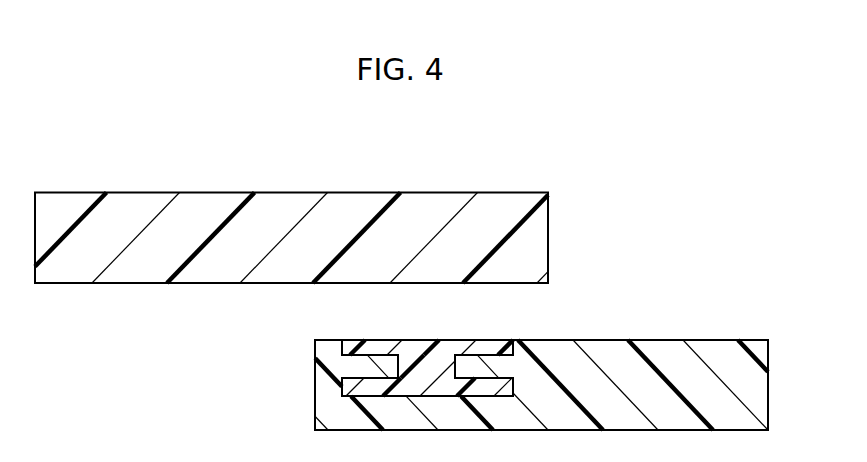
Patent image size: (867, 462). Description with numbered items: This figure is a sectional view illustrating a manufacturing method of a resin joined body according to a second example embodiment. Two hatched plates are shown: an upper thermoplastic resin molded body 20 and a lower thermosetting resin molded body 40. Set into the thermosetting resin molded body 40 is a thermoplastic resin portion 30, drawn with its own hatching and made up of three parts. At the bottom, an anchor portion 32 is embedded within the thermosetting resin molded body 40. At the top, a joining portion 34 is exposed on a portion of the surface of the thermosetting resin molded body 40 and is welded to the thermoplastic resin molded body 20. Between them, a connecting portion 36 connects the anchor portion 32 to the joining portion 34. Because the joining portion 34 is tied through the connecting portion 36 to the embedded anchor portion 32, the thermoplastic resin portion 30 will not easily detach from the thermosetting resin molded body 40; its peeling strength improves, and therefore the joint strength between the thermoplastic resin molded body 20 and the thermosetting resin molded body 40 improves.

The thermoplastic resin molded body 20 is at (137, 192).
The thermosetting resin molded body 40 is at (731, 339).
The thermoplastic resin portion 30 is at (498, 321).
The anchor portion 32 is at (508, 388).
The joining portion 34 is at (493, 347).
The connecting portion 36 is at (447, 360).